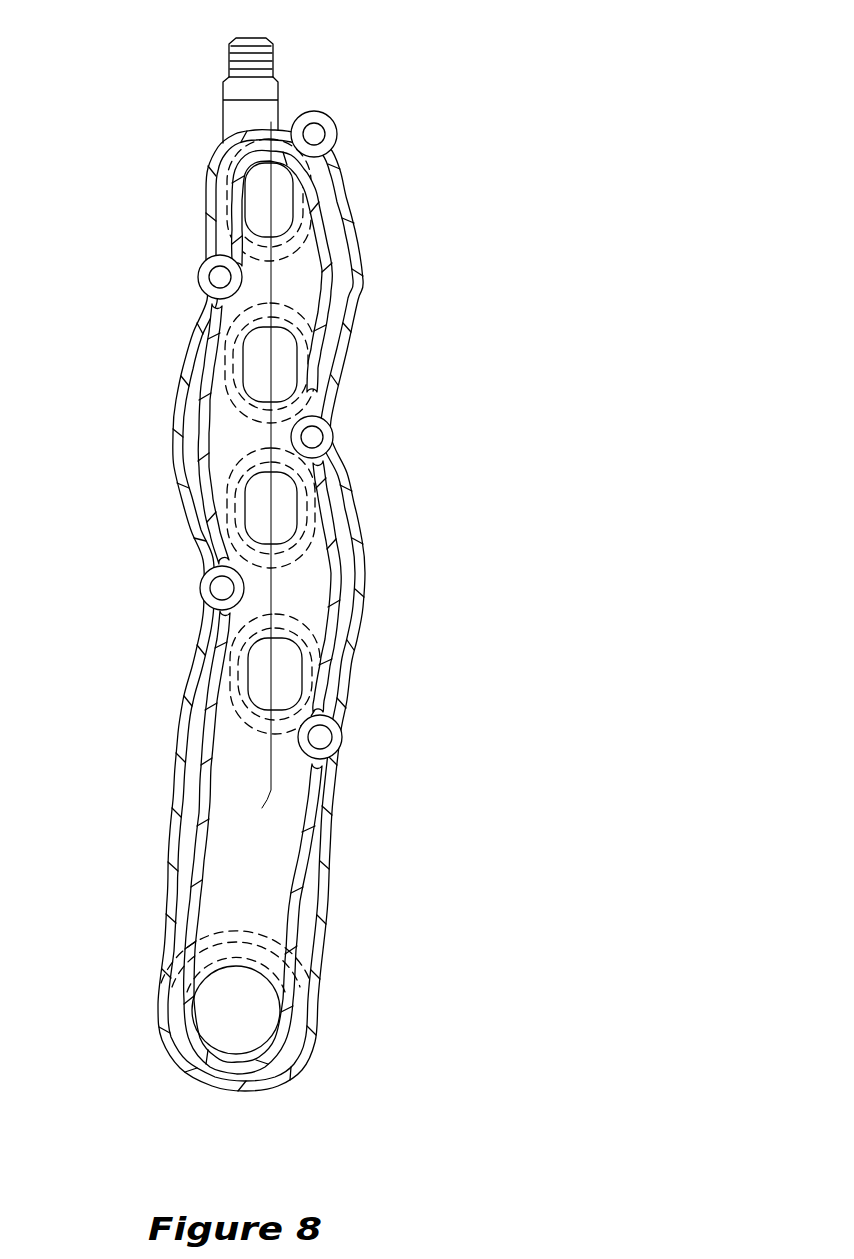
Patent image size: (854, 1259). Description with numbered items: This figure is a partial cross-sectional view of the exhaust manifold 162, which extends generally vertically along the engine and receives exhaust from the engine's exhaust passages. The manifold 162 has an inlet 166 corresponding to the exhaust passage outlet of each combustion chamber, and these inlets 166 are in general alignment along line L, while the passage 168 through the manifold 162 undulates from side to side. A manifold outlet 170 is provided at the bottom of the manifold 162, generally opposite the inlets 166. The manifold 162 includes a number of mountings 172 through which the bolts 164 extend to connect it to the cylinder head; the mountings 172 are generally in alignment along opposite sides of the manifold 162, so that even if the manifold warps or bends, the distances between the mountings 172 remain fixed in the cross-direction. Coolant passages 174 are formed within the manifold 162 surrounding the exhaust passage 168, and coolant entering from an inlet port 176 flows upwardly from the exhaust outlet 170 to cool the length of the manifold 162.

The exhaust manifold 162 is at (424, 172).
The bolts 164 is at (323, 143).
The inlet 166 is at (283, 218).
The passage 168 is at (267, 902).
The manifold outlet 170 is at (258, 1025).
The mountings 172 is at (318, 118).
The coolant passages 174 is at (190, 782).
The inlet port 176 is at (275, 62).